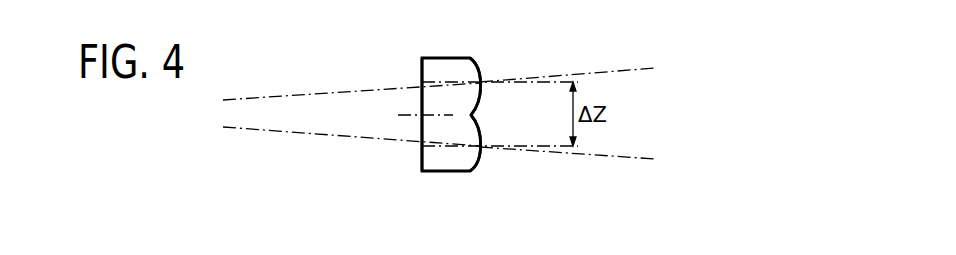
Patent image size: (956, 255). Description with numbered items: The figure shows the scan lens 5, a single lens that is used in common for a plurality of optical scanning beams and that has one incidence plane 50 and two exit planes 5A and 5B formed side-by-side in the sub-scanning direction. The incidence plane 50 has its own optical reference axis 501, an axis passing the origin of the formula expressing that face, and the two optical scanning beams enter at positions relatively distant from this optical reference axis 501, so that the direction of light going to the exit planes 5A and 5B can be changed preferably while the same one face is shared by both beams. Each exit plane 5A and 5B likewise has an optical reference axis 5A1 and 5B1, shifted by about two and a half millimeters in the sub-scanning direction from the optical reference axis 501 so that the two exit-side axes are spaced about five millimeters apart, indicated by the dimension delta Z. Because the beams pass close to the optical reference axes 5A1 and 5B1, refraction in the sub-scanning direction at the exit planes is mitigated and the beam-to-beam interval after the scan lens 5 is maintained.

The scan lens 5 is at (452, 163).
The incidence plane 50 is at (422, 72).
The optical reference axis of the incidence plane 501 is at (403, 115).
The exit plane 5A is at (478, 158).
The exit plane 5B is at (480, 74).
The optical reference axis of exit plane 5A 5A1 is at (578, 146).
The optical reference axis of exit plane 5B 5B1 is at (578, 82).